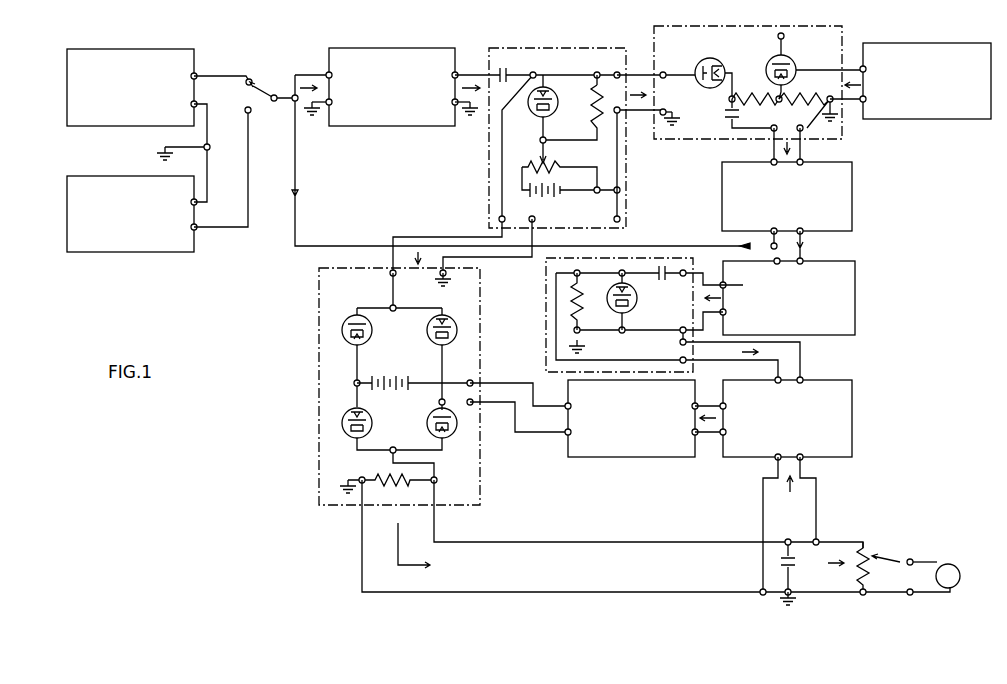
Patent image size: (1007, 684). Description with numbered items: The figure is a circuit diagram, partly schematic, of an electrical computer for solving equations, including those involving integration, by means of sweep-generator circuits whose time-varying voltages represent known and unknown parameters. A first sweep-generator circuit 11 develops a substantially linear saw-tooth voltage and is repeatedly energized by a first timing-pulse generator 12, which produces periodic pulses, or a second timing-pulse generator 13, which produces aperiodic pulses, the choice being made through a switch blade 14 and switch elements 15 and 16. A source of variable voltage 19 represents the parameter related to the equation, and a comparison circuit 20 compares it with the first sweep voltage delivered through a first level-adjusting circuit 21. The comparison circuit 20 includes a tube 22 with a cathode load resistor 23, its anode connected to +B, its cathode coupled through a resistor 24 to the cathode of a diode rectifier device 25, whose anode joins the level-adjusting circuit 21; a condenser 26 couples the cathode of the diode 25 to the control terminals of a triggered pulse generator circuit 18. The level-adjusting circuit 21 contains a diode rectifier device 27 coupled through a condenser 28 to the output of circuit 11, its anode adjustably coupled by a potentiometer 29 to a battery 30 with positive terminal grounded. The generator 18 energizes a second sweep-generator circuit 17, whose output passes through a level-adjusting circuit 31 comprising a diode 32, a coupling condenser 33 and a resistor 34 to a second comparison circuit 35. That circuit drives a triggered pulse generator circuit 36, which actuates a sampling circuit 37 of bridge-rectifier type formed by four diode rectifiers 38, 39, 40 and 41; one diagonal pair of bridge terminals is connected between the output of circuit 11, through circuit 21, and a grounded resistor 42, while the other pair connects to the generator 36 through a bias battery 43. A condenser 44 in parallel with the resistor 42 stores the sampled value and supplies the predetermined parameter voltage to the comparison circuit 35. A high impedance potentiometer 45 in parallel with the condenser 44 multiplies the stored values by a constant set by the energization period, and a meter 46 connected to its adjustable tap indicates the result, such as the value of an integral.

The first sweep-generator circuit 11 is at (401, 45).
The first timing-pulse generator 12 is at (151, 48).
The second timing-pulse generator 13 is at (134, 174).
The switch blade 14 is at (264, 104).
The switch element 15 is at (244, 86).
The switch element 16 is at (244, 110).
The second sweep-generator circuit 17 is at (855, 290).
The triggered pulse generator circuit 18 is at (852, 193).
The source of variable voltage 19 is at (934, 44).
The comparison circuit 20 is at (838, 50).
The first level-adjusting circuit 21 is at (575, 46).
The tube 22 is at (794, 63).
The cathode load resistor 23 is at (805, 92).
The resistor 24 is at (762, 76).
The diode rectifier device 25 is at (712, 58).
The condenser 26 is at (720, 115).
The diode rectifier device 27 is at (560, 85).
The condenser 28 is at (508, 69).
The potentiometer 29 is at (562, 168).
The battery 30 is at (545, 198).
The level-adjusting circuit 31 is at (544, 322).
The diode 32 is at (614, 314).
The coupling condenser 33 is at (664, 281).
The resistor 34 is at (586, 283).
The second comparison circuit 35 is at (743, 461).
The triggered pulse generator circuit 36 is at (574, 458).
The sampling circuit 37 is at (318, 358).
The diode rectifier 38 is at (344, 326).
The diode rectifier 39 is at (343, 416).
The diode rectifier 40 is at (456, 324).
The diode rectifier 41 is at (452, 434).
The grounded resistor 42 is at (378, 472).
The battery 43 is at (402, 368).
The condenser 44 is at (796, 562).
The high impedance potentiometer 45 is at (870, 550).
The meter 46 is at (954, 562).